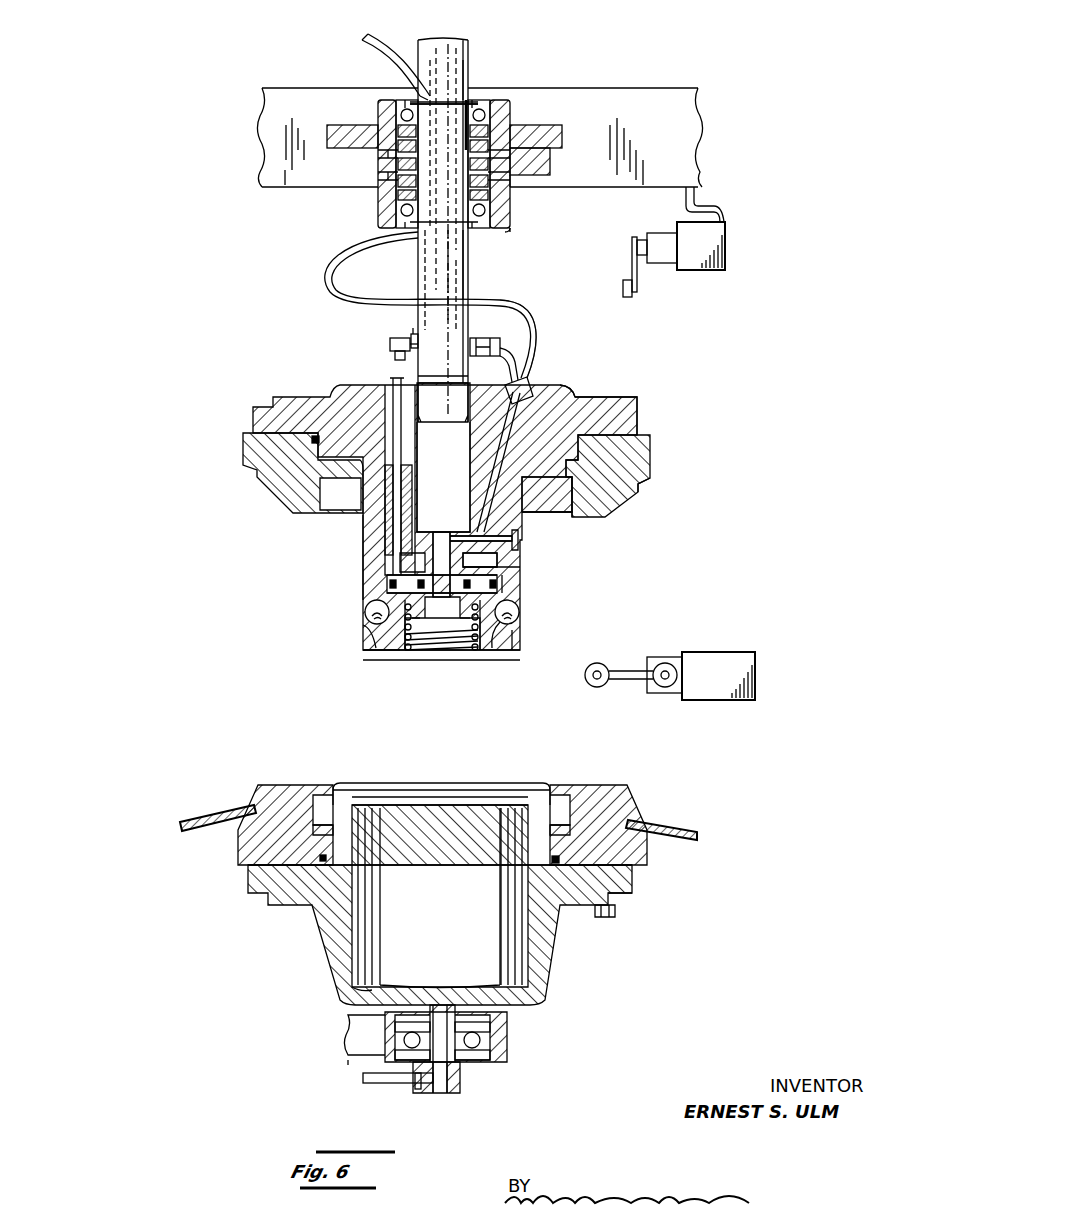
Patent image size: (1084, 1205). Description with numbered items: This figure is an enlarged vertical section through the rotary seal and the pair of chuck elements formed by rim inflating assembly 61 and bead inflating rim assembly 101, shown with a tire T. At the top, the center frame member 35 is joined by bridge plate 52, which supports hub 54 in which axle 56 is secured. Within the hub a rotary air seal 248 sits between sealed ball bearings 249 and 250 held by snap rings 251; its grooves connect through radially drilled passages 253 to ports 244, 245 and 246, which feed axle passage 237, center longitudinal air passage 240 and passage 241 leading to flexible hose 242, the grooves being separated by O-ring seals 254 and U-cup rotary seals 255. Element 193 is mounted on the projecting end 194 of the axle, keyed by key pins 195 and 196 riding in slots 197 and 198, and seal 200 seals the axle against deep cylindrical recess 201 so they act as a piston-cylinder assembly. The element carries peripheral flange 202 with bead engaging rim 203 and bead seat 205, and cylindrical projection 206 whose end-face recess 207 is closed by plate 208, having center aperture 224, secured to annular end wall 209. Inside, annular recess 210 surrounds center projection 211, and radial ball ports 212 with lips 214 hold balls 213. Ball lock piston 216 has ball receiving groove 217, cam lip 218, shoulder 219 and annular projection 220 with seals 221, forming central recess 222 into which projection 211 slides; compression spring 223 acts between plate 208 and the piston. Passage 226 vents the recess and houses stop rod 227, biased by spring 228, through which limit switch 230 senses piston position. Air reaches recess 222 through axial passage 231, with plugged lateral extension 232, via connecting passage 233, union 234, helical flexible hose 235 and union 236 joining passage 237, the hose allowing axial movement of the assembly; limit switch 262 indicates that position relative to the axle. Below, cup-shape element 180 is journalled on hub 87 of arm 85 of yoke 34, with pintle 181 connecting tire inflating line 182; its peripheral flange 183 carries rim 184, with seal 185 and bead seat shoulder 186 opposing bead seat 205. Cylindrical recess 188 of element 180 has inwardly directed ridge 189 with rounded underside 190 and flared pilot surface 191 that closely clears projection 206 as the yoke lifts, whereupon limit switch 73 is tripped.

The center frame member 35 is at (668, 86).
The center longitudinal air passage 240 is at (470, 44).
The passage 241 is at (465, 70).
The flexible hose 242 is at (360, 46).
The U-cup rotary seal 255 is at (418, 88).
The snap ring 251 is at (470, 100).
The sealed ball bearing 249 is at (488, 118).
The port 246 is at (376, 128).
The port 245 is at (378, 158).
The port 244 is at (378, 176).
The O-ring seal 254 is at (376, 208).
The rotary air seal 248 is at (490, 125).
The plate 52 is at (552, 128).
The radially drilled passage 253 is at (512, 182).
The sealed ball bearing 250 is at (512, 218).
The hub 54 is at (512, 226).
The passage 237 is at (470, 250).
The union 236 is at (416, 258).
The axle 56 is at (455, 266).
The slot 197 is at (418, 276).
The slot 198 is at (465, 286).
The flexible hose 235 is at (508, 310).
The limit switch 262 is at (716, 232).
The key pin 195 is at (410, 330).
The limit switch 230 is at (388, 342).
The key pin 196 is at (503, 342).
The element 193 is at (586, 382).
The seal 200 is at (520, 368).
The rim inflating assembly 61 is at (630, 393).
The union 234 is at (530, 388).
The spring 228 is at (388, 384).
The peripheral flange 202 is at (637, 418).
The projecting end 194 is at (440, 420).
The cylindrical recess 201 is at (420, 478).
The stop rod 227 is at (363, 490).
The connecting passage 233 is at (498, 486).
The bead seat 205 is at (640, 488).
The bead engaging rim 203 is at (610, 496).
The air passage 231 is at (440, 540).
The passage 226 is at (362, 535).
The lateral extension 232 is at (520, 540).
The cylindrical projection 206 is at (362, 560).
The annular upper projection 210 is at (497, 560).
The seal 221 is at (388, 584).
The projection 211 is at (497, 572).
The annular projection 220 is at (385, 592).
The outer edge 214 is at (518, 602).
The cam lip 218 is at (366, 620).
The ball 213 is at (518, 612).
The annular end wall 209 is at (366, 642).
The ball port 212 is at (505, 622).
The ball receiving groove 217 is at (516, 640).
The ball lock piston 216 is at (380, 660).
The compression spring 223 is at (412, 652).
The central recess 222 is at (445, 650).
The circular shoulder 219 is at (484, 652).
The plate 208 is at (520, 658).
The center aperture 224 is at (425, 652).
The recess 207 is at (468, 650).
The limit switch 73 is at (720, 660).
The pilot surface 191 is at (395, 792).
The tire T is at (660, 820).
The bead seat shoulder 186 is at (228, 828).
The rounded underside 190 is at (362, 820).
The inwardly directed ridge 189 is at (425, 815).
The seal 185 is at (560, 862).
The tire bead engaging rim 184 is at (647, 845).
The peripheral flange 183 is at (632, 885).
The cylindrical recess 188 is at (358, 912).
The bead inflating rim assembly 101 is at (623, 919).
The cup-shape element 180 is at (548, 970).
The longitudinal frame element 85 is at (350, 1036).
The hub 87 is at (507, 1045).
The yoke 34 is at (343, 1069).
The tire inflating line 182 is at (378, 1085).
The pintle 181 is at (460, 1085).